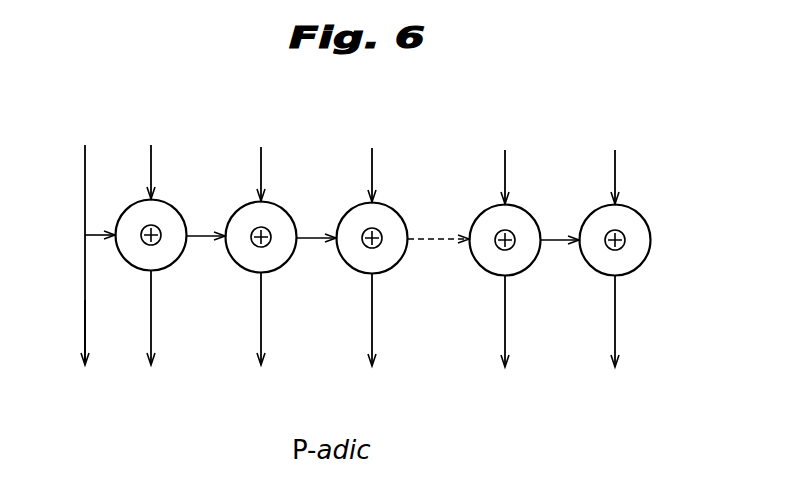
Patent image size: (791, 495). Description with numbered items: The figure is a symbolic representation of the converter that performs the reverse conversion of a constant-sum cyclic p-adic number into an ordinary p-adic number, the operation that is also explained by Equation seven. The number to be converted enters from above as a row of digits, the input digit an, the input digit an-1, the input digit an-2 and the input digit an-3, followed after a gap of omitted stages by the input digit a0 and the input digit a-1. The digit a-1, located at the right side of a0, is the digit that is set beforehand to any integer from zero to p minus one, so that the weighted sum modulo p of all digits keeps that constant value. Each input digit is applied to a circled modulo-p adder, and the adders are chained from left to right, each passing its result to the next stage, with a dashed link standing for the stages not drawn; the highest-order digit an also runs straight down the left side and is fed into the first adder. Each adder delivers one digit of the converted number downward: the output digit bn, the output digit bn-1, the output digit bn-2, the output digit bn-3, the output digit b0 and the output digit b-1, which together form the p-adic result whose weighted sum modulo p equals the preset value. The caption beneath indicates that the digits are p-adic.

The input digit a_n an is at (83, 237).
The input digit a_n-1 an-1 is at (156, 154).
The input digit a_n-2 an-2 is at (262, 156).
The input digit a_n-3 an-3 is at (374, 157).
The input digit a_0 a0 is at (501, 158).
The input digit a_-1 a-1 is at (615, 158).
The output digit b_n bn is at (84, 355).
The output digit b_n-1 bn-1 is at (158, 340).
The output digit b_n-2 bn-2 is at (264, 342).
The output digit b_n-3 bn-3 is at (378, 344).
The output digit b_0 b0 is at (504, 345).
The output digit b_-1 b-1 is at (617, 345).